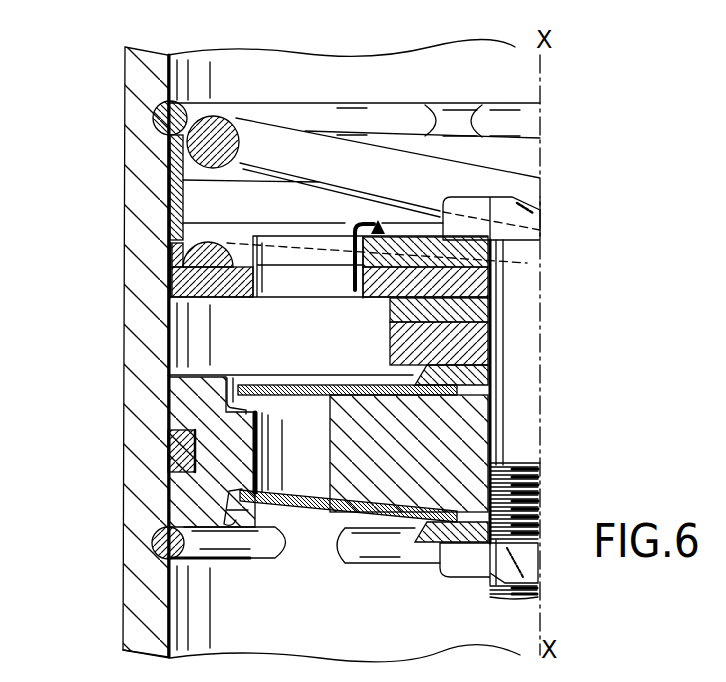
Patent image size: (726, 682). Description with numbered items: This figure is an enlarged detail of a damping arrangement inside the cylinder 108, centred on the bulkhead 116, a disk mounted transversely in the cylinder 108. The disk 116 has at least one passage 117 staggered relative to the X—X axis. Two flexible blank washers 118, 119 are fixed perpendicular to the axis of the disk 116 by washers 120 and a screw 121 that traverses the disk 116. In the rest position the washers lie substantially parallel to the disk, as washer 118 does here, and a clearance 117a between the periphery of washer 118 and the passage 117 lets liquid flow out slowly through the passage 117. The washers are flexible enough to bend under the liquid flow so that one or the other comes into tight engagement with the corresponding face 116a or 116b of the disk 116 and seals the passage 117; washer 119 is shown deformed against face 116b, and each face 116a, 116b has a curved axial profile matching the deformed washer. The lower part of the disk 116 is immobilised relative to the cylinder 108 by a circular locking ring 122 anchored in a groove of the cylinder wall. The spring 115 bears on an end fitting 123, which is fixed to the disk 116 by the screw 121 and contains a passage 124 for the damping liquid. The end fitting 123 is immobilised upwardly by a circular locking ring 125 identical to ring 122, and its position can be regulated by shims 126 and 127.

The cylinder 108 is at (135, 335).
The spring 115 is at (307, 160).
The bulkhead 116 is at (190, 417).
The face of disk 116a is at (240, 407).
The face of disk 116b is at (313, 520).
The passage 117 is at (270, 452).
The clearance 117a is at (252, 361).
The flexible blank washer 118 is at (310, 386).
The flexible blank washer 119 is at (298, 522).
The washers 120 is at (493, 375).
The screw 121 is at (518, 427).
The circular locking ring 122 is at (213, 545).
The end fitting 123 is at (172, 280).
The passage 124 is at (304, 283).
The circular locking ring 125 is at (273, 110).
The shim 126 is at (172, 238).
The shim 127 is at (490, 337).